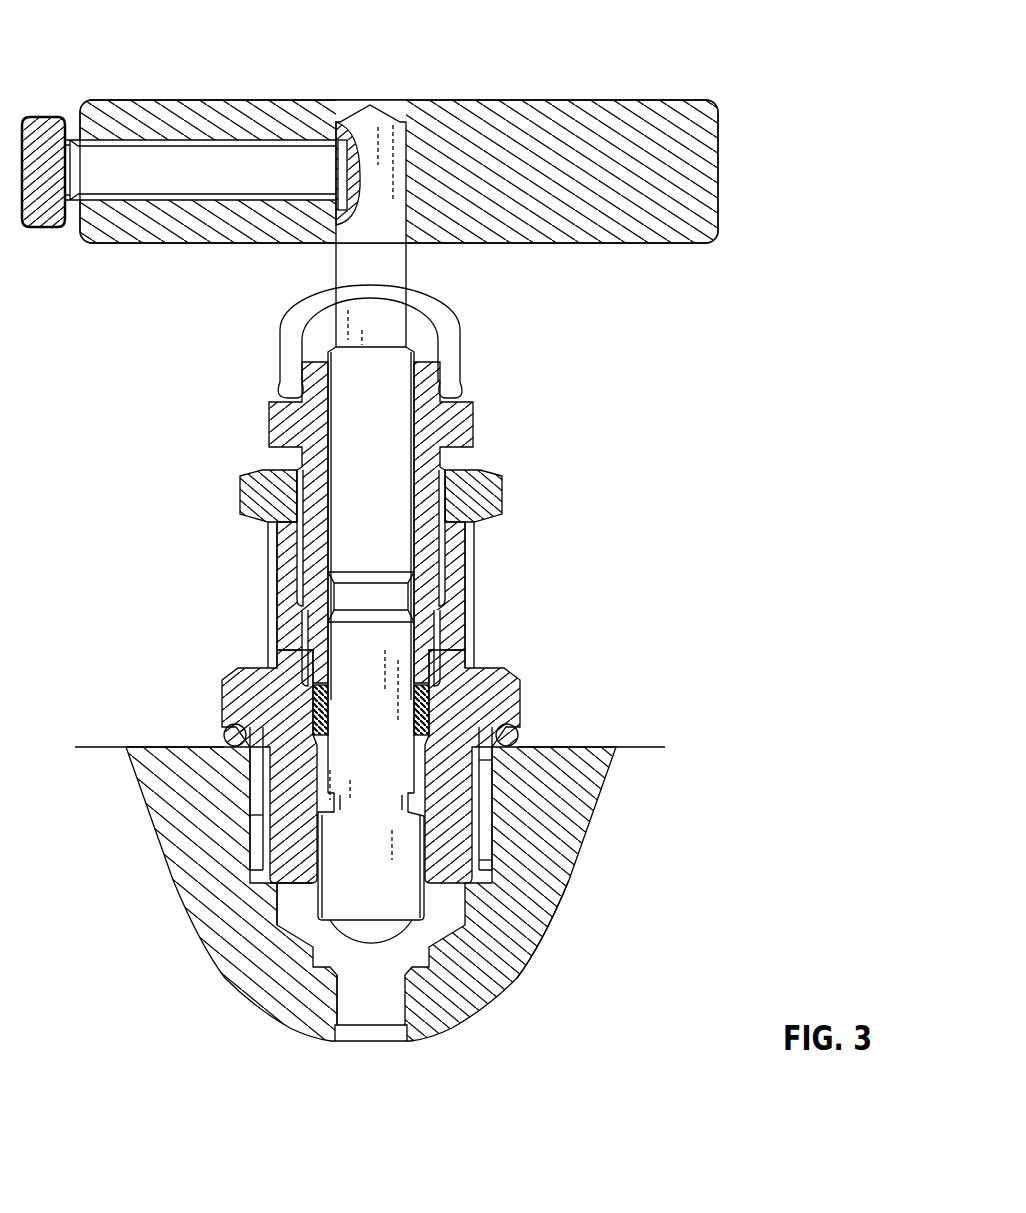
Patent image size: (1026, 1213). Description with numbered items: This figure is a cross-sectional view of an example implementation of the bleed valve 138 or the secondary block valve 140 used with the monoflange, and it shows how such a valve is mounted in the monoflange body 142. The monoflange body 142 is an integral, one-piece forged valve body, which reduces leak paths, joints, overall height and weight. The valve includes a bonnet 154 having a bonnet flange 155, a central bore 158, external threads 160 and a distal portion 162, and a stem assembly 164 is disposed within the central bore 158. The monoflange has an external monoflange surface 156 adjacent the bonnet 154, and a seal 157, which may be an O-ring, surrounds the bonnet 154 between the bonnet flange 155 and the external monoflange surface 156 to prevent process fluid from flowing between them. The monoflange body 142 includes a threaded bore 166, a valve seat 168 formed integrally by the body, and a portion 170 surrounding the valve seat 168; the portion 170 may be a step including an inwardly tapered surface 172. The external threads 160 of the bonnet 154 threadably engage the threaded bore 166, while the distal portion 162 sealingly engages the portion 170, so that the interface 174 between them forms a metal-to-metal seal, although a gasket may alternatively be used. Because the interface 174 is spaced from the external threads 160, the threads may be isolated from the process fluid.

The bleed valve 138 is at (468, 154).
The secondary block valve 140 is at (370, 171).
The monoflange body 142 is at (476, 988).
The bonnet 154 is at (280, 618).
The bonnet flange 155 is at (240, 703).
The external monoflange surface 156 is at (117, 745).
The seal 157 is at (520, 733).
The central bore 158 is at (322, 565).
The external threads 160 is at (484, 772).
The distal portion 162 is at (472, 865).
The stem assembly 164 is at (386, 676).
The threaded bore 166 is at (263, 820).
The valve seat 168 is at (341, 968).
The portion surrounding the valve seat 170 is at (273, 887).
The inwardly tapered surface 172 is at (517, 957).
The interface 174 is at (270, 880).